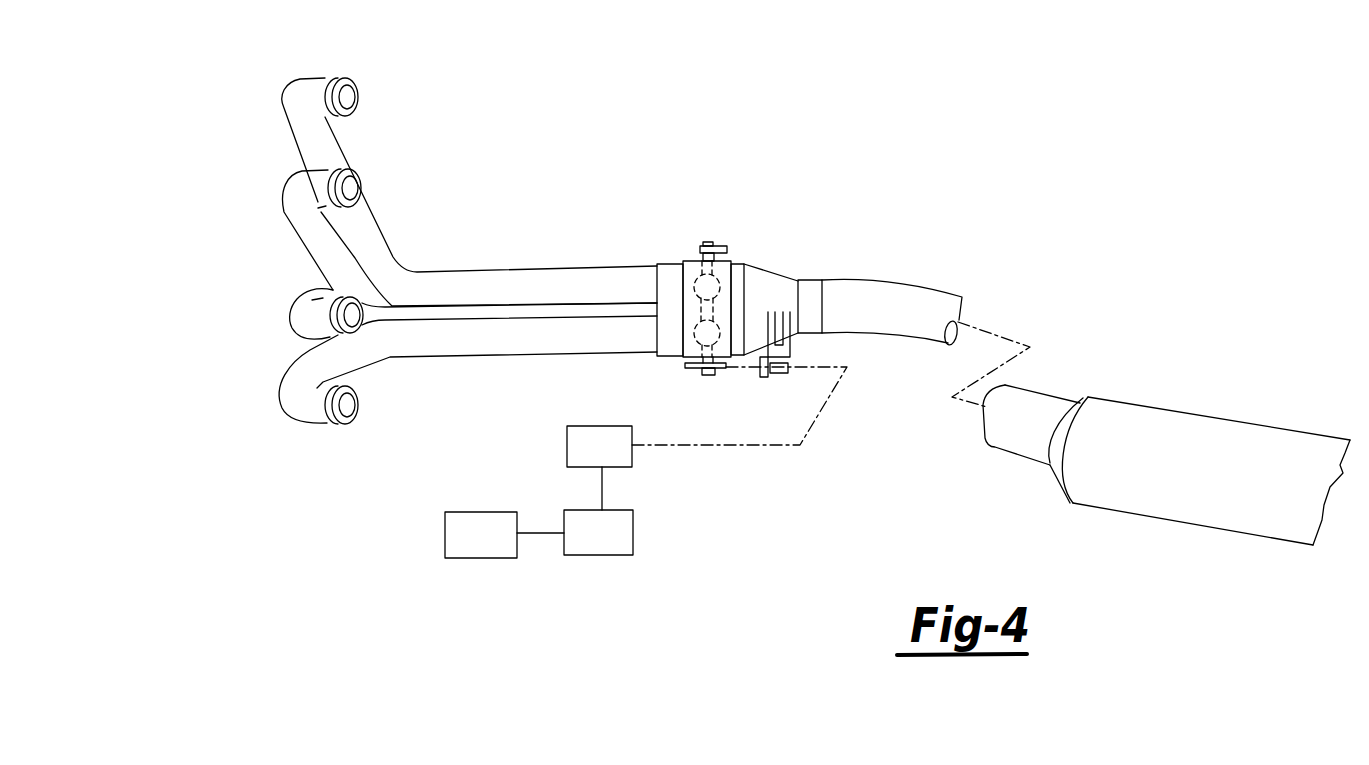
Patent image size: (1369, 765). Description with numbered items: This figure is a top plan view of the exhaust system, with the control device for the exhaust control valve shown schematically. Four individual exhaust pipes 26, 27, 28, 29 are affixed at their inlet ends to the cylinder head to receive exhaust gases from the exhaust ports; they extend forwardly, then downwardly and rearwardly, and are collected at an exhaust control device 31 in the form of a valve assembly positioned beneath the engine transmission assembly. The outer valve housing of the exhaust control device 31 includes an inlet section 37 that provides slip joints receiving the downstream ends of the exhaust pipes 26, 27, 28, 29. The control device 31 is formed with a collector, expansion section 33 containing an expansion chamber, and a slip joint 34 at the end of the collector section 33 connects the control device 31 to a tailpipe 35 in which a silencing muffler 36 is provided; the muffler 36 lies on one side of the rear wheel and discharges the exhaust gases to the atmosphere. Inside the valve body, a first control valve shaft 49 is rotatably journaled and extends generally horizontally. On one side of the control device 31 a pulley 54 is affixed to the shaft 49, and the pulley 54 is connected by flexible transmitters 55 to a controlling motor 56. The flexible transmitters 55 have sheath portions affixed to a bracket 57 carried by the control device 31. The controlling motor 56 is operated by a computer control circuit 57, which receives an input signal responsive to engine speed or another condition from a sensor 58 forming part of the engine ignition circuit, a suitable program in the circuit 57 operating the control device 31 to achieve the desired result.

The exhaust pipe 26 is at (305, 424).
The exhaust pipe 27 is at (285, 328).
The exhaust pipe 28 is at (297, 240).
The exhaust pipe 29 is at (300, 143).
The exhaust control device 31 is at (690, 258).
The collector, expansion section 33 is at (770, 265).
The slip joint 34 is at (820, 282).
The tailpipe 35 is at (920, 284).
The silencing muffler 36 is at (1205, 415).
The inlet section 37 is at (672, 262).
The first control valve shaft 49 is at (708, 377).
The pulley 54 is at (690, 376).
The flexible transmitters 55 is at (700, 448).
The controlling motor 56 is at (567, 440).
The bracket / computer control circuit 57 is at (770, 376).
The sensor 58 is at (485, 512).